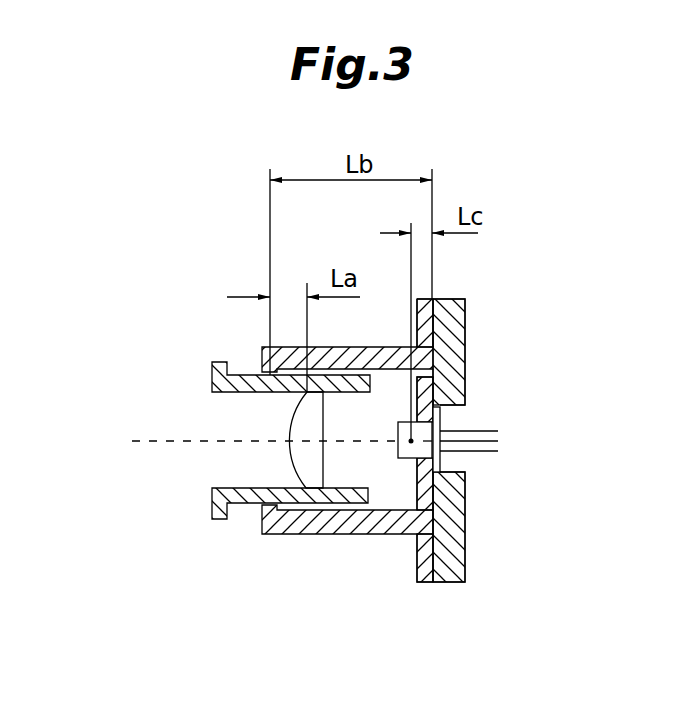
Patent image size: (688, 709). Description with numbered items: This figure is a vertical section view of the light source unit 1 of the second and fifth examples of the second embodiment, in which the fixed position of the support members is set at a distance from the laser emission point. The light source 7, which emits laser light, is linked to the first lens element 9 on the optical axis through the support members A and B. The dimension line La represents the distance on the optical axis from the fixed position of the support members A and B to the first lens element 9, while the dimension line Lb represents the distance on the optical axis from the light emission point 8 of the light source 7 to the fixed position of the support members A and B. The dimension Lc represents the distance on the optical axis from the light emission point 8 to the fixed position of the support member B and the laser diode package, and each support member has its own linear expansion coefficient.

The light source unit 1 is at (127, 303).
The light source 7 is at (443, 462).
The light emission point 8 is at (410, 442).
The first lens element 9 is at (302, 462).
The support member A is at (212, 505).
The support member B is at (343, 535).